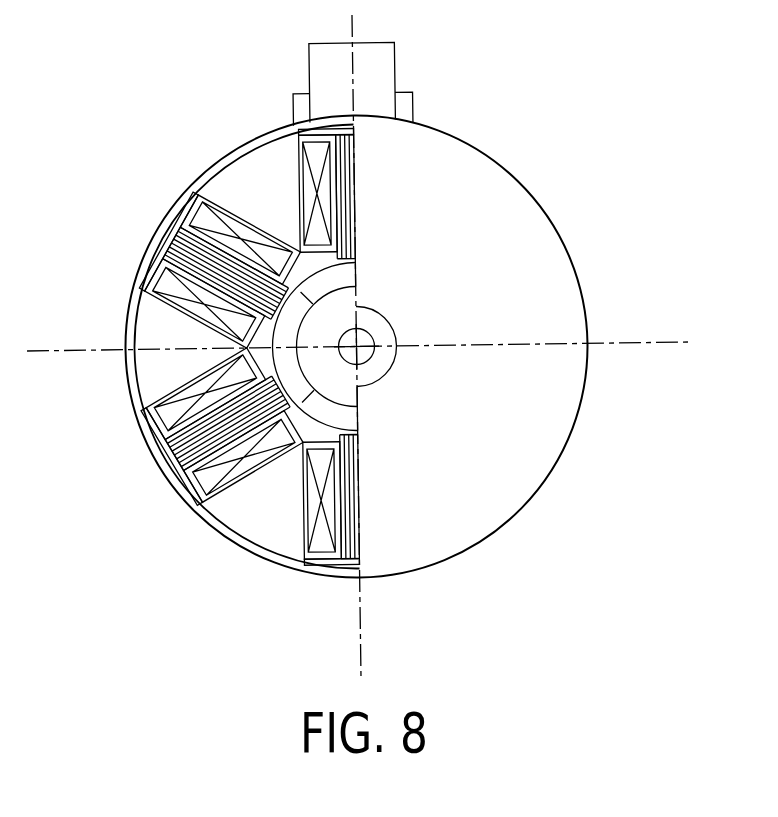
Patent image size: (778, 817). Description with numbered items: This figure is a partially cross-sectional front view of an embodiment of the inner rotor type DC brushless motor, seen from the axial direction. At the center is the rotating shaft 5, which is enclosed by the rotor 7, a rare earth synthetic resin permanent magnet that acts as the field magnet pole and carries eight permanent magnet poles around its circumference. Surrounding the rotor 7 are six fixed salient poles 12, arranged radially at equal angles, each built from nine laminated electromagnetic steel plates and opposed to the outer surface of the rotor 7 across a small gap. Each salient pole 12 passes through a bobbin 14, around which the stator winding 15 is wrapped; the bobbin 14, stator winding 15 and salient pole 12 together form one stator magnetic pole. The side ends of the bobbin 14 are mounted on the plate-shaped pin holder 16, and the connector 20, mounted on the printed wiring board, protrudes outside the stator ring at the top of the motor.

The rotating shaft 5 is at (383, 328).
The rotor 7 is at (348, 416).
The salient pole 12 is at (352, 525).
The bobbin 14 is at (327, 556).
The stator winding 15 is at (312, 510).
The pin holder 16 is at (408, 106).
The connector 20 is at (372, 68).